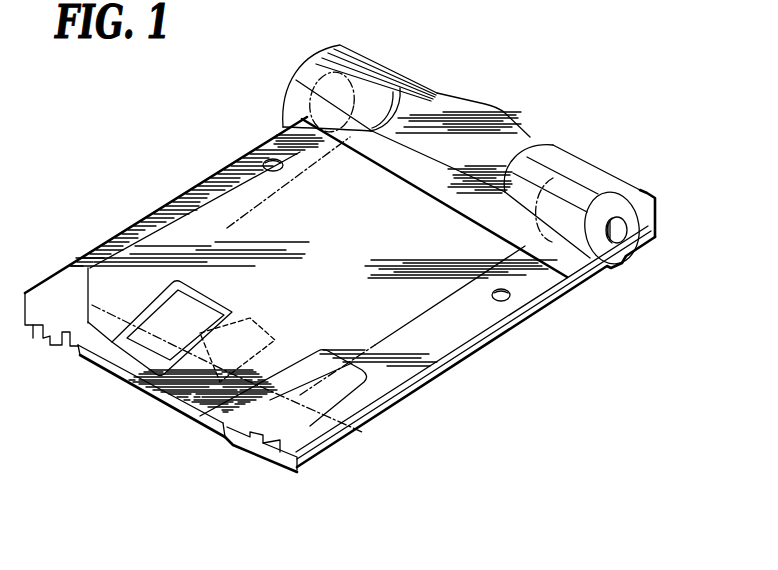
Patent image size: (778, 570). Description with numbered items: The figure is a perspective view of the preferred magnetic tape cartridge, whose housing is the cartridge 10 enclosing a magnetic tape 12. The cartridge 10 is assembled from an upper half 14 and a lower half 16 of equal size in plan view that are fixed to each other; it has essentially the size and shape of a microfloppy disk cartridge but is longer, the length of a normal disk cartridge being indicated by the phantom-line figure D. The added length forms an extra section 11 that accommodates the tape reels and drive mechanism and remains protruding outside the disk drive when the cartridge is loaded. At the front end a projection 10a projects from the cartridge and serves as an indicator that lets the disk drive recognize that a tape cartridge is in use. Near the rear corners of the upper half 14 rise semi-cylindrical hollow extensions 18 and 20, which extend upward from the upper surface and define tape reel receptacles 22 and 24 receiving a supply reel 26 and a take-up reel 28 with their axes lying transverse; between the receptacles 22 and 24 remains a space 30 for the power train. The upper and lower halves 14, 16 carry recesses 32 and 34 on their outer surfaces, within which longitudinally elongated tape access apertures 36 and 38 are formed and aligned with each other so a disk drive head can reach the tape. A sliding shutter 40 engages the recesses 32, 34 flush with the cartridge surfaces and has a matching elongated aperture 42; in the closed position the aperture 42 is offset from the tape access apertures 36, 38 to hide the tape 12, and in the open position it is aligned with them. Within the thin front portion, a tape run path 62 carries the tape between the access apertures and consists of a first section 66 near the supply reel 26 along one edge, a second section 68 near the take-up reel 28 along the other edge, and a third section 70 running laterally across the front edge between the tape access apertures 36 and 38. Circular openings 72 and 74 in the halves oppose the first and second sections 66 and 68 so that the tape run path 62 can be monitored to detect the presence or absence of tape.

The cartridge 10 is at (500, 103).
The projection 10a is at (40, 340).
The extra section 11 is at (579, 158).
The magnetic tape 12 is at (457, 342).
The upper half 14 is at (430, 383).
The lower half 16 is at (393, 407).
The semi-cylindrical hollow extension 18 is at (623, 176).
The semi-cylindrical hollow extension 20 is at (350, 60).
The tape reel receptacle 22 is at (568, 250).
The tape reel receptacle 24 is at (377, 80).
The supply reel 26 is at (580, 184).
The take-up reel 28 is at (322, 72).
The space for power train 30 is at (513, 153).
The recess 32 is at (243, 440).
The recess 34 is at (267, 441).
The tape access aperture 36 is at (272, 328).
The tape access aperture 38 is at (283, 372).
The sliding shutter 40 is at (170, 293).
The aperture 42 is at (210, 298).
The tape run path 62 is at (167, 206).
The first section 66 is at (378, 340).
The second section 68 is at (223, 182).
The third section 70 is at (195, 424).
The circular opening 72 is at (510, 297).
The circular opening 74 is at (271, 158).
The phantom-line figure D is at (418, 190).